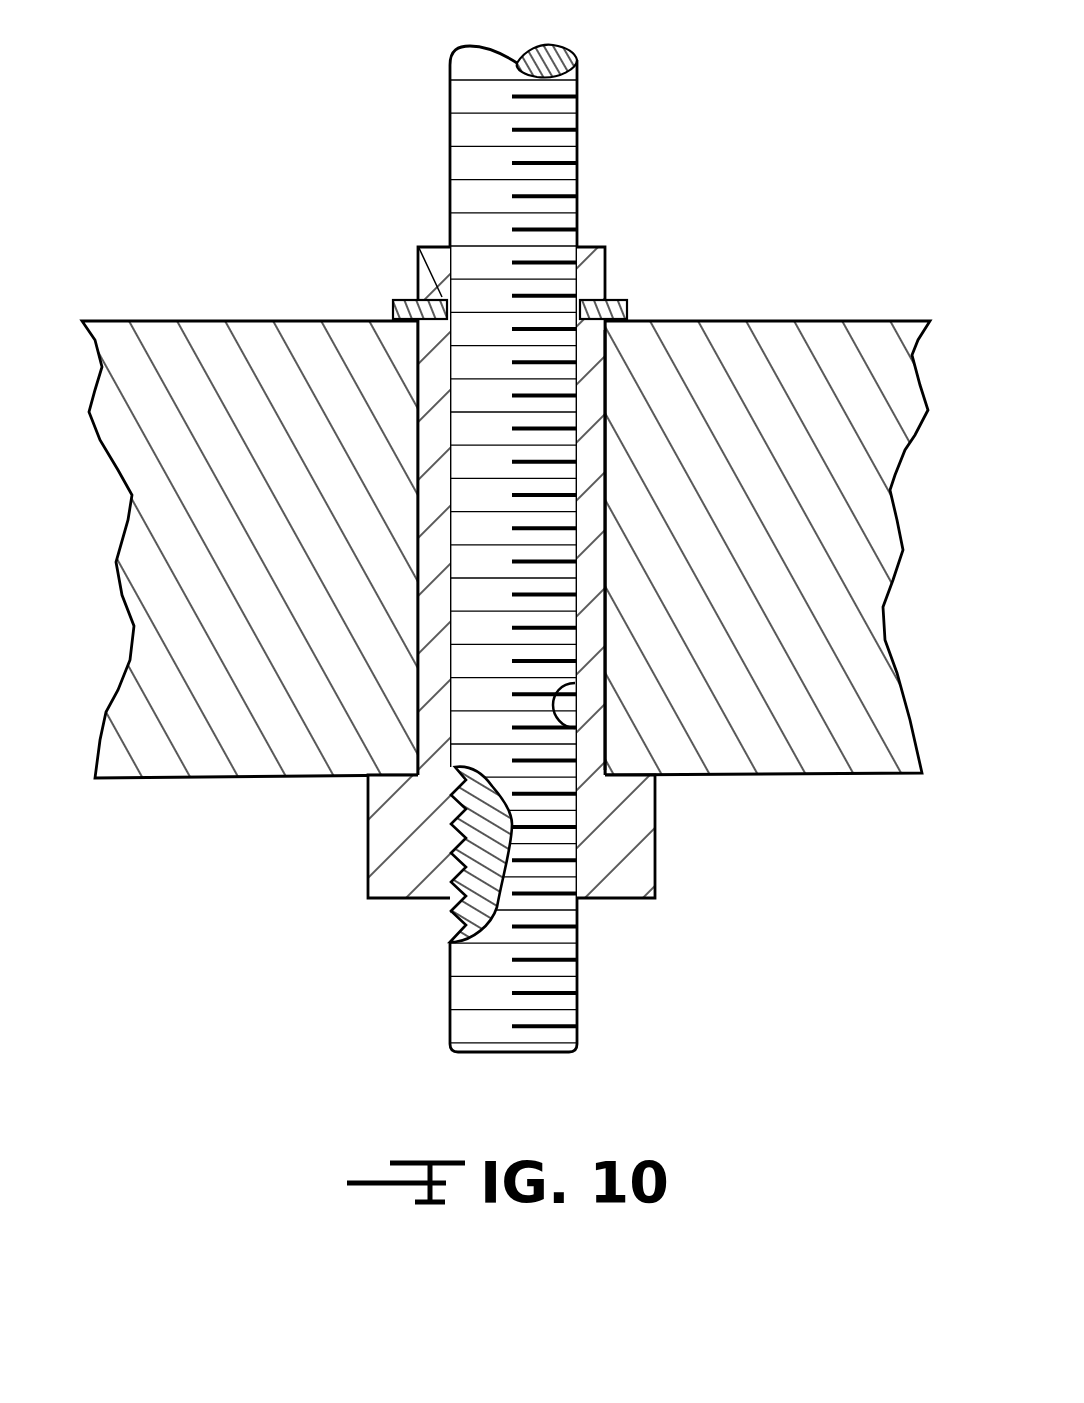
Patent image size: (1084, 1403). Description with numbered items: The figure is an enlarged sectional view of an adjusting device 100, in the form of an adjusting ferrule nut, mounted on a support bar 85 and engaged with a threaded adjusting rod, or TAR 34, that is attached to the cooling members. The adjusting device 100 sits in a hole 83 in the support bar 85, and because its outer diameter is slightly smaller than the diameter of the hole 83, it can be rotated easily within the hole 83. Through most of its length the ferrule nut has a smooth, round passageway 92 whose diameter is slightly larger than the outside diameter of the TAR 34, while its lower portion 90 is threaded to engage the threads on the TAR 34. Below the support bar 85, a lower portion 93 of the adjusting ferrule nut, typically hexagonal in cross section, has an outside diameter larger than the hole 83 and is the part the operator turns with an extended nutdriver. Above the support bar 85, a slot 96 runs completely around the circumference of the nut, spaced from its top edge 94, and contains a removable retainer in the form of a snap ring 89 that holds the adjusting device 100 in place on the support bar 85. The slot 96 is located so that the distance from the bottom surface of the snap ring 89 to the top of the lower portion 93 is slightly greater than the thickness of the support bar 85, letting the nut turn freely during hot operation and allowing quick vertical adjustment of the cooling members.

The TAR 34 is at (515, 143).
The hole 83 is at (607, 568).
The support bar 85 is at (228, 320).
The snap ring 89 is at (627, 300).
The lower portion 90 is at (462, 873).
The passageway 92 is at (575, 730).
The lower portion 93 is at (655, 898).
The top edge 94 is at (605, 248).
The slot 96 is at (442, 297).
The adjusting device 100 is at (414, 242).